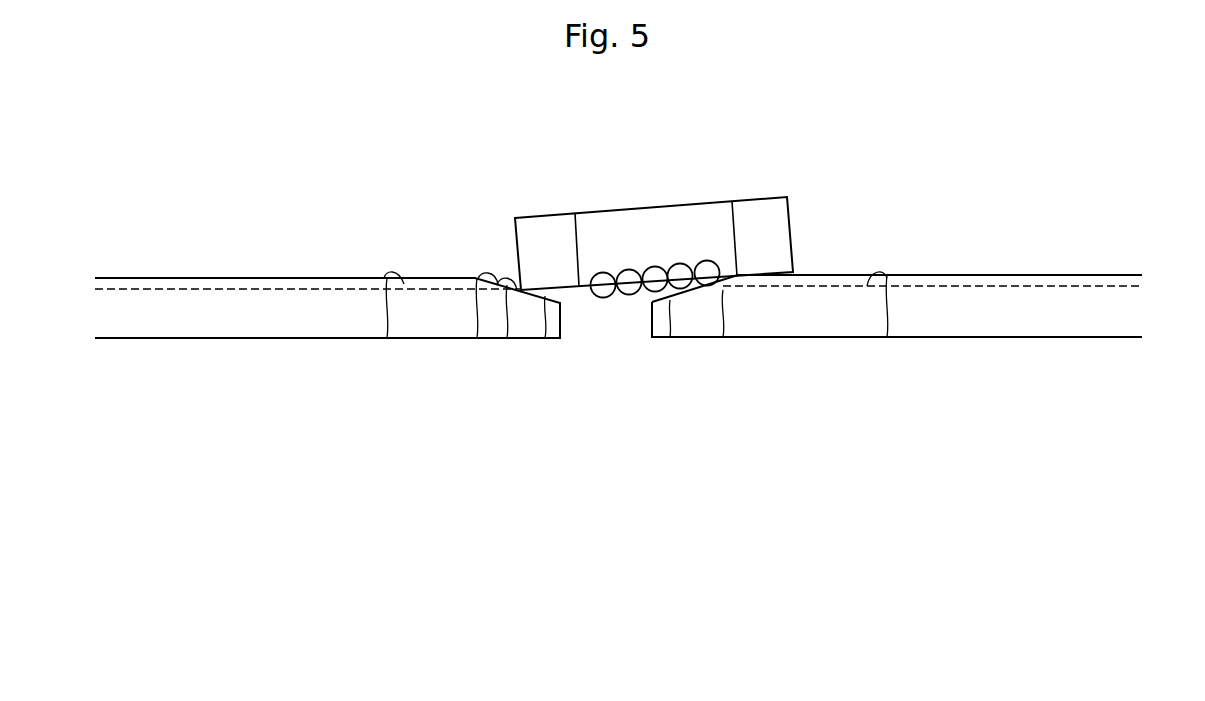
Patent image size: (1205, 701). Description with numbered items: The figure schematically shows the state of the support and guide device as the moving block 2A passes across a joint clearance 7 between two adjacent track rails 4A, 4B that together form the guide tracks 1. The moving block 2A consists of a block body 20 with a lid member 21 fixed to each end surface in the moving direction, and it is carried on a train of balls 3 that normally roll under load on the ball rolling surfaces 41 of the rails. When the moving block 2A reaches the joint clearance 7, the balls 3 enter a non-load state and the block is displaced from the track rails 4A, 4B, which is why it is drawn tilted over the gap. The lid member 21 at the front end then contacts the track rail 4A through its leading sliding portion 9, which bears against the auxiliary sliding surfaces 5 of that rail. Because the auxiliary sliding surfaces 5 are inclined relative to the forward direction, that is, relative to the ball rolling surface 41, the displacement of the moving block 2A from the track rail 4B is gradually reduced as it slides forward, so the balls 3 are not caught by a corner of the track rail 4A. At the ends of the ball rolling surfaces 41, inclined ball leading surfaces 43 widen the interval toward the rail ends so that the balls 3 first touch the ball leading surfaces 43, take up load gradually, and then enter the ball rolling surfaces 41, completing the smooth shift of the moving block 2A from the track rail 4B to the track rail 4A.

The guide track 1 is at (180, 204).
The moving block 2A is at (687, 198).
The block body 20 is at (620, 232).
The lid member 21 is at (548, 240).
The balls 3 is at (709, 285).
The track rail 4A is at (277, 272).
The track rail 4B is at (1013, 270).
The ball rolling surface 41 is at (387, 338).
The ball leading surface 43 is at (477, 338).
The auxiliary sliding surface 5 is at (507, 338).
The joint clearance 7 is at (601, 328).
The leading sliding portion 9 is at (545, 338).